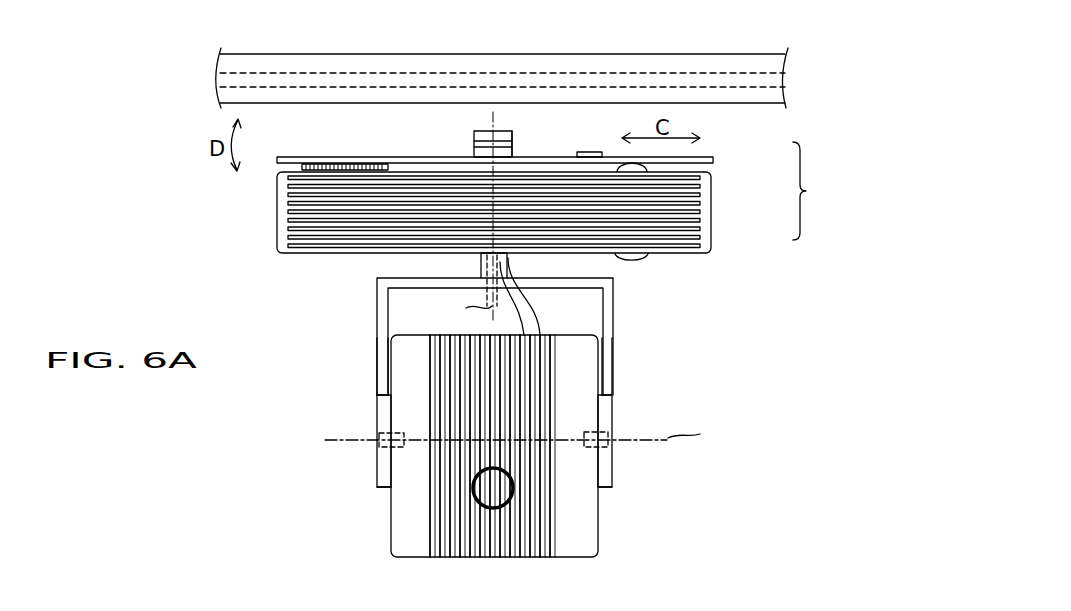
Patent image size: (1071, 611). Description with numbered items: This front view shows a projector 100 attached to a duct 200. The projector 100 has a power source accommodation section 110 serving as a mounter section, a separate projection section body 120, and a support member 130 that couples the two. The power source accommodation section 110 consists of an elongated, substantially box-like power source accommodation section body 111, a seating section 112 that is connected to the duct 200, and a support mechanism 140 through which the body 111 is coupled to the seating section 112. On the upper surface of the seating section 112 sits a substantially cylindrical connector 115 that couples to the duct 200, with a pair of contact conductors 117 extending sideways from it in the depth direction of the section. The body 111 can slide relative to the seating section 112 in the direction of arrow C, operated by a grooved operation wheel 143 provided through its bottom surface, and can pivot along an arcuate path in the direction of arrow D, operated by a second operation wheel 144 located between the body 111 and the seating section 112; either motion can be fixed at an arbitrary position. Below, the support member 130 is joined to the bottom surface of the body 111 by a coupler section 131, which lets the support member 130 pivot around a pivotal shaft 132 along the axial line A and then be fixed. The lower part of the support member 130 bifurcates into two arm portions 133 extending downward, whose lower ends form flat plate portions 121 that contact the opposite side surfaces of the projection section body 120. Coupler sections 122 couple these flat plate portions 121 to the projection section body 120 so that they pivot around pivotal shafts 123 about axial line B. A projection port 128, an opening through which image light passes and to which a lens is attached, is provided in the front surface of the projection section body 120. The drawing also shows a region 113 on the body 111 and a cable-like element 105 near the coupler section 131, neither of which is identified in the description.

The duct 200 is at (748, 54).
The projector 100 is at (810, 284).
The power source accommodation section 110 is at (565, 199).
The power source accommodation section body 111 is at (713, 230).
The seating section 112 is at (713, 160).
The nozzle rows 113 is at (700, 195).
The connector 115 is at (513, 147).
The contact conductors 117 is at (477, 137).
The projection section body 120 is at (600, 546).
The flat plate portions 121 is at (383, 488).
The coupler sections 122 is at (356, 424).
The pivotal shafts 123 is at (383, 455).
The projection port 128 is at (492, 490).
The support member 130 is at (614, 298).
The coupler section 131 is at (452, 270).
The pivotal shaft 132 is at (507, 257).
The arm portions 133 is at (378, 338).
The support mechanism 140 is at (558, 148).
The operation wheel 143 is at (648, 257).
The operation wheel 144 is at (348, 165).
The flexible cable 105 is at (532, 308).